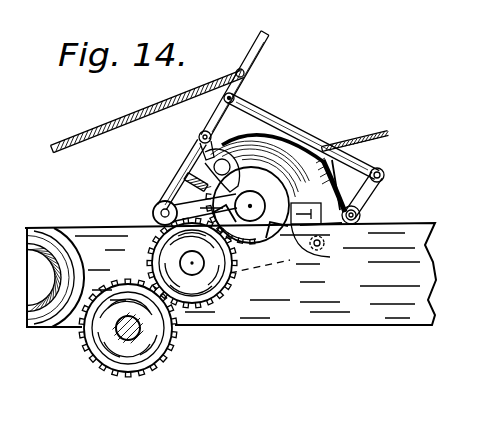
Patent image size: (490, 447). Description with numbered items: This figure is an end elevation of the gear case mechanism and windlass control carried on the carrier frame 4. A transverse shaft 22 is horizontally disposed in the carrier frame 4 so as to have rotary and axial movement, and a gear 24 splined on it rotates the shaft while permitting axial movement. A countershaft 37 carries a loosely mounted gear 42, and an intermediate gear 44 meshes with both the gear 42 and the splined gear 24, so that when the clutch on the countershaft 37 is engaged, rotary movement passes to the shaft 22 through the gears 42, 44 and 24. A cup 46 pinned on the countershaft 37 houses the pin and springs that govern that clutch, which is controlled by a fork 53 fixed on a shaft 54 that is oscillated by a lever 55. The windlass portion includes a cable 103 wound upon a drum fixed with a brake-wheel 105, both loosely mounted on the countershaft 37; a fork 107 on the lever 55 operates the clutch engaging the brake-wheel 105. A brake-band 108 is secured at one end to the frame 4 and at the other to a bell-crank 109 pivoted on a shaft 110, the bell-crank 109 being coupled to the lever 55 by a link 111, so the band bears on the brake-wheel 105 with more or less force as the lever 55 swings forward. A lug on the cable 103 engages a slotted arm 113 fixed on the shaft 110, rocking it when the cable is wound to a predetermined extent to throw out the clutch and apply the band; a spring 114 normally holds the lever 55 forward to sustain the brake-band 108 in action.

The carrier frame 4 is at (230, 275).
The transverse shaft 22 is at (132, 337).
The gear 24 is at (162, 345).
The countershaft 37 is at (252, 204).
The gear 42 is at (262, 240).
The intermediate gear 44 is at (223, 293).
The cup 46 is at (319, 259).
The fork 53 is at (181, 183).
The shaft 54 is at (152, 210).
The lever 55 is at (267, 43).
The cable 103 is at (389, 138).
The brake-wheel 105 is at (261, 192).
The fork 107 is at (200, 144).
The brake-band 108 is at (270, 136).
The bell-crank 109 is at (383, 195).
The shaft 110 is at (360, 218).
The link 111 is at (288, 142).
The slotted arm 113 is at (323, 158).
The spring 114 is at (110, 128).